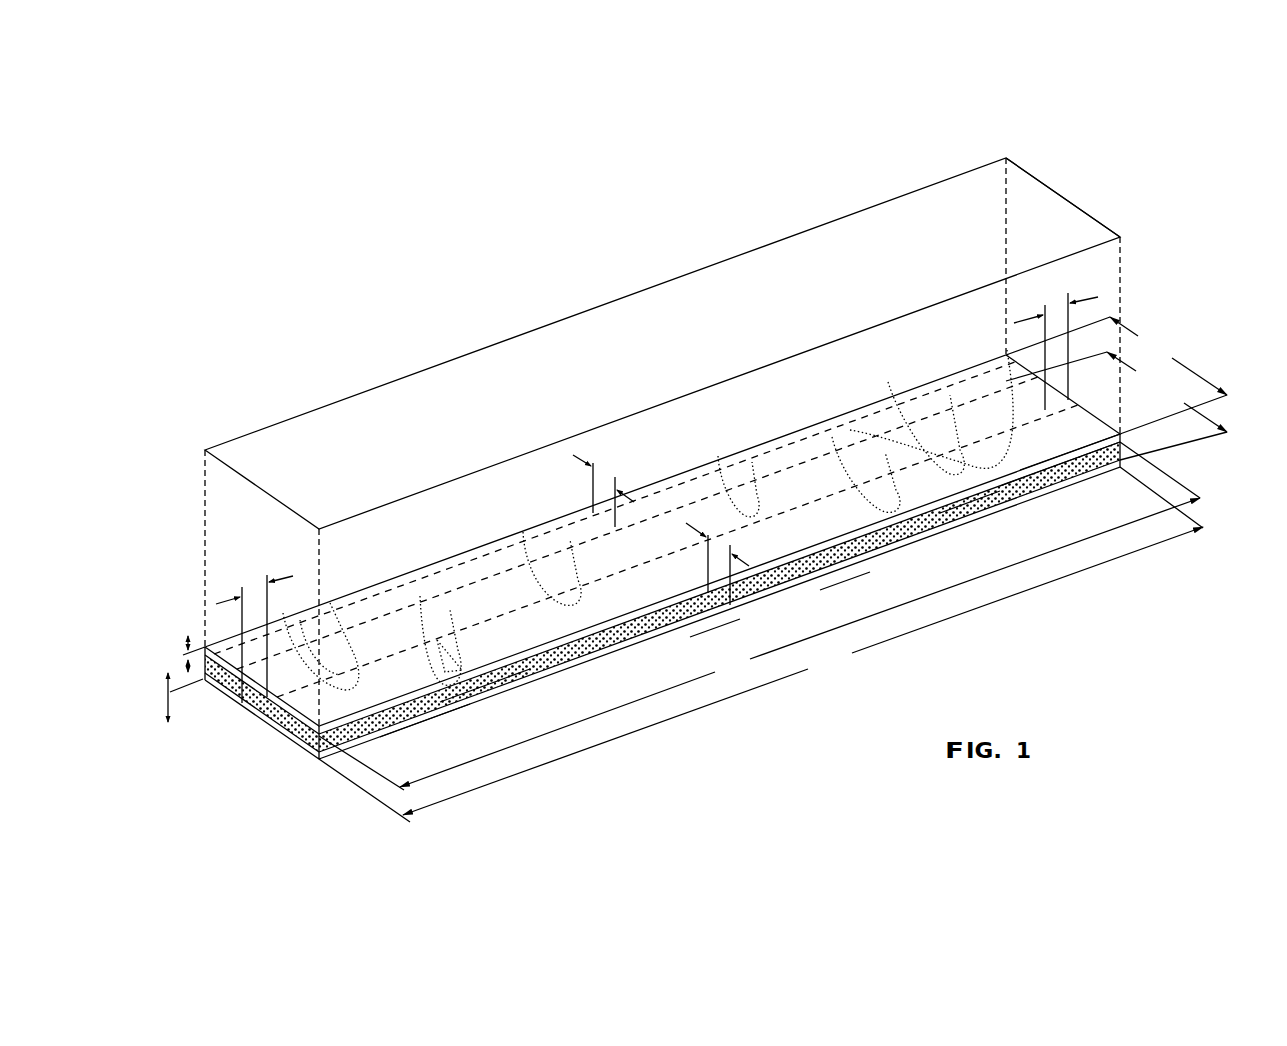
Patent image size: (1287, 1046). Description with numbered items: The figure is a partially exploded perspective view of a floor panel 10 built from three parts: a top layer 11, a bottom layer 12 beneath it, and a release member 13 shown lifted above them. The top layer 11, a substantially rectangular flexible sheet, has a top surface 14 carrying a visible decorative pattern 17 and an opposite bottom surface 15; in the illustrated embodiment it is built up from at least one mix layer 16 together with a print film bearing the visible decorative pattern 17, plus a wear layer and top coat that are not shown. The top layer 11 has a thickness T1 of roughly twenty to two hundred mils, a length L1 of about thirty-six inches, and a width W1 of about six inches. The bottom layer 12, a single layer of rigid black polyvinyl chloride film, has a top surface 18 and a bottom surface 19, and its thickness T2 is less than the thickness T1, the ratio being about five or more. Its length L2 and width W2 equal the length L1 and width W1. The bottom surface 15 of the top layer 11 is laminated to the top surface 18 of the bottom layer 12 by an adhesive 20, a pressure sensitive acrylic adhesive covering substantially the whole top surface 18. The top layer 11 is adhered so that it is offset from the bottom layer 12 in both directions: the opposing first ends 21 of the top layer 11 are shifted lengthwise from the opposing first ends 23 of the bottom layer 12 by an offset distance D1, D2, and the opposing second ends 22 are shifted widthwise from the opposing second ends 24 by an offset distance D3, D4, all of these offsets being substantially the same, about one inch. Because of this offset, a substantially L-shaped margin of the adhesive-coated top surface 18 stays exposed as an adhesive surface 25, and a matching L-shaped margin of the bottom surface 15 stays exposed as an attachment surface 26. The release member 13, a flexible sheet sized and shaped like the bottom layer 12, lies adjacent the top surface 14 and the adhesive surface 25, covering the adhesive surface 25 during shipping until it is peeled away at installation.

The floor panel 10 is at (545, 282).
The top layer 11 is at (333, 706).
The bottom layer 12 is at (278, 752).
The release member 13 is at (1070, 195).
The top surface 14 is at (340, 736).
The bottom surface 15 is at (1122, 447).
The mix layer 16 is at (997, 484).
The visible decorative pattern 17 is at (1055, 468).
The top surface 18 is at (393, 731).
The bottom surface 19 is at (456, 704).
The adhesive 20 is at (626, 655).
The first ends 21 is at (1118, 437).
The second ends 22 is at (385, 577).
The first ends 23 is at (1134, 473).
The second ends 24 is at (848, 574).
The adhesive surface 25 is at (702, 636).
The attachment surface 26 is at (822, 412).
The offset distance D1 is at (292, 574).
The offset distance D2 is at (1098, 296).
The offset distance D3 is at (732, 541).
The offset distance D4 is at (614, 463).
The thickness T1 is at (186, 638).
The thickness T2 is at (167, 721).
The width W1 is at (1116, 375).
The width W2 is at (1116, 406).
The length L1 is at (759, 616).
The length L2 is at (761, 644).